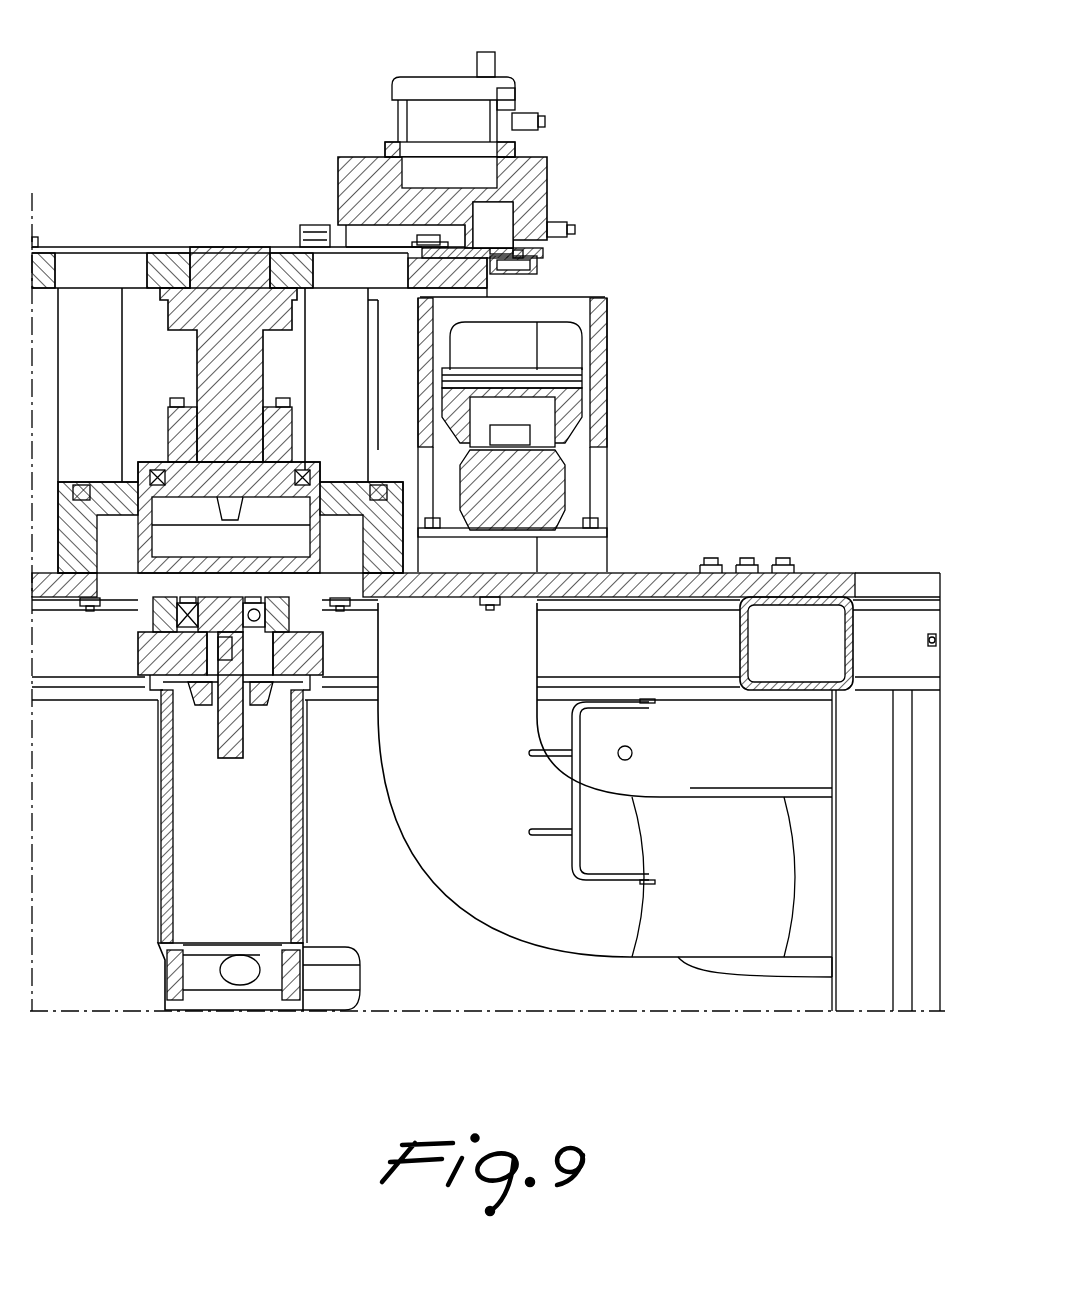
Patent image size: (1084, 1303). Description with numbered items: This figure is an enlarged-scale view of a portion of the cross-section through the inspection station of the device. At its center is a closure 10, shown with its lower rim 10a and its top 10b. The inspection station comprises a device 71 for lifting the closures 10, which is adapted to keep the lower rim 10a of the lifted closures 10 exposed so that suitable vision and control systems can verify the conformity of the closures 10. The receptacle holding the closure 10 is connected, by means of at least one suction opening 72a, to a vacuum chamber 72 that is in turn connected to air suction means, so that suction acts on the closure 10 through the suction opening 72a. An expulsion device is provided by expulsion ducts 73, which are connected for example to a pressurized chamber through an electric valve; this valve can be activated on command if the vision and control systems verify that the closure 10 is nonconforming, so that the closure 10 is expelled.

The closure 10 is at (520, 266).
The lower rim 10a is at (505, 275).
The top 10b is at (515, 250).
The device for lifting the closures 71 is at (494, 170).
The vacuum chamber 72 is at (451, 153).
The suction opening 72a is at (498, 252).
The expulsion duct 73 is at (521, 258).